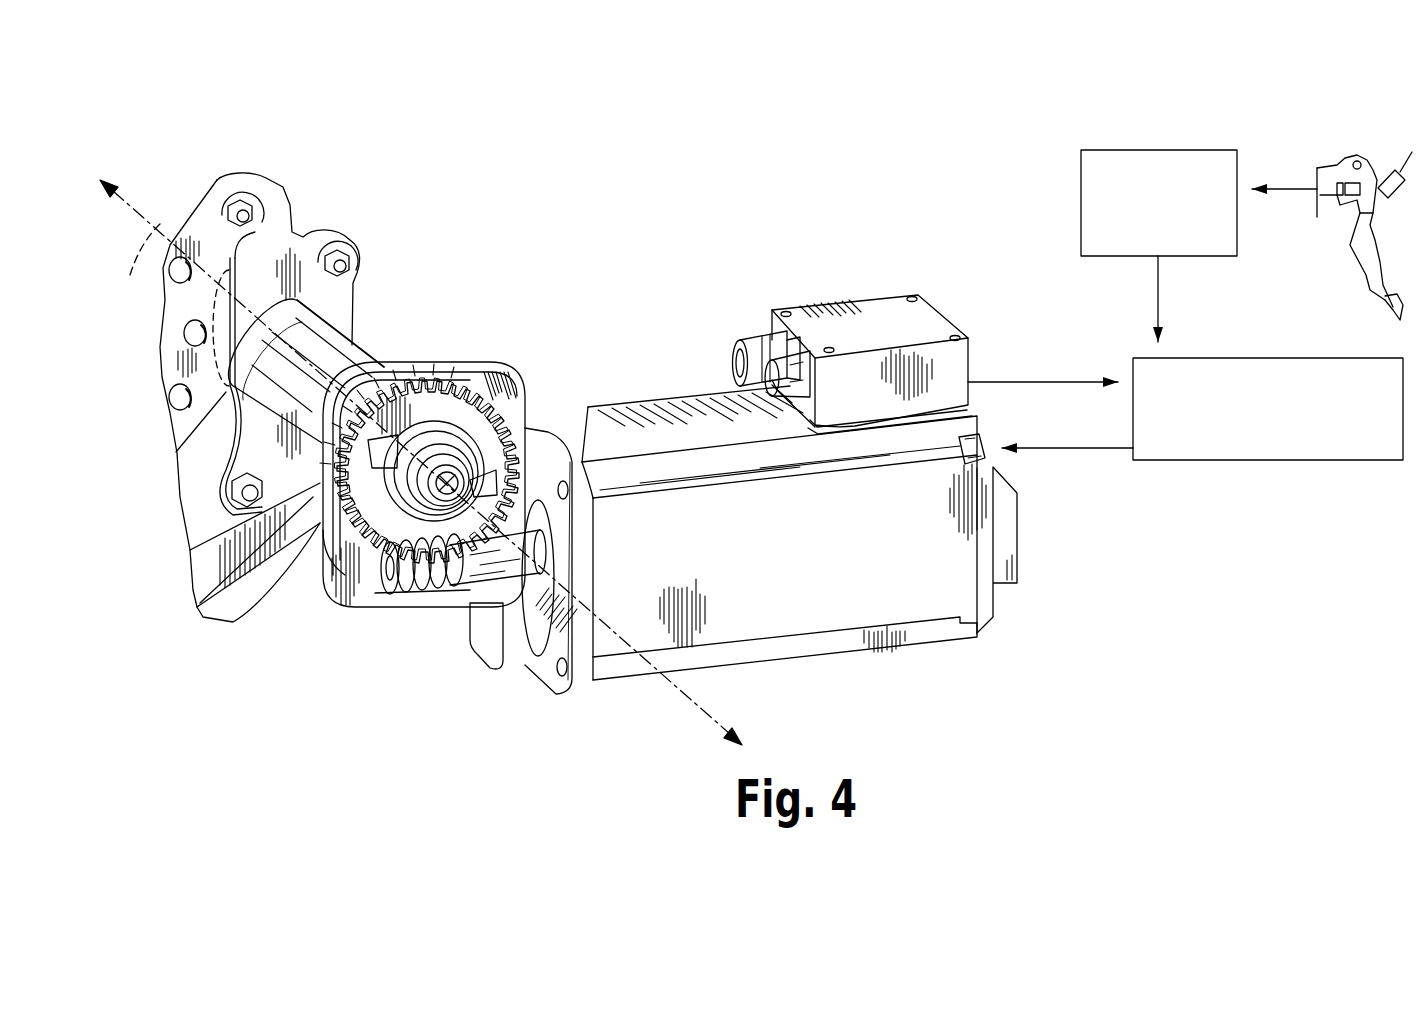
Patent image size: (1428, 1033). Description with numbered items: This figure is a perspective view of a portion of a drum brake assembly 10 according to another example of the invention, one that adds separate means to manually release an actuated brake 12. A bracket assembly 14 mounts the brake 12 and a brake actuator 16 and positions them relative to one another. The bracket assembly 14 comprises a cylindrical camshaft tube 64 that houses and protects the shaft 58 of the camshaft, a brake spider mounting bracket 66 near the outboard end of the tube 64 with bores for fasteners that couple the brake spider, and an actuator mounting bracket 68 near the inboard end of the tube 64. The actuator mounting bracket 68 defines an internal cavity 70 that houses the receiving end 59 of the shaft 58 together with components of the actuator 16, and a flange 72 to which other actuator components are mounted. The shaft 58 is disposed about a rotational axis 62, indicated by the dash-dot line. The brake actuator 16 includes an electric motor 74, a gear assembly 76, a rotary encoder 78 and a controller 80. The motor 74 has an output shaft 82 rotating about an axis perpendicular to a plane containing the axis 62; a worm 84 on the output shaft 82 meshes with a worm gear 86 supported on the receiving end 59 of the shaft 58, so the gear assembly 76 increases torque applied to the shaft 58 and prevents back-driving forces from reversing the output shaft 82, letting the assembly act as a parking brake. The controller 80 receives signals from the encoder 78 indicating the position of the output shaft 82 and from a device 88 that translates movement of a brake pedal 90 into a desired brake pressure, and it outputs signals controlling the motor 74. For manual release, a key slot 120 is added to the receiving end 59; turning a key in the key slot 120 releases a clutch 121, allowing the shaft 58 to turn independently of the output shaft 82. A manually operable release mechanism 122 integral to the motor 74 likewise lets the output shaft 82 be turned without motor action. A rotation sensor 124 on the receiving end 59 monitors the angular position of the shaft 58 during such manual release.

The drum brake assembly 10 is at (536, 328).
The brake 12 is at (206, 516).
The bracket assembly 14 is at (372, 310).
The brake actuator 16 is at (1036, 509).
The shaft 58 is at (400, 492).
The receiving end 59 is at (332, 567).
The rotational axis 62 is at (421, 462).
The camshaft tube 64 is at (360, 353).
The brake spider mounting bracket 66 is at (298, 267).
The actuator mounting bracket 68 is at (513, 362).
The internal cavity 70 is at (393, 548).
The flange 72 is at (490, 643).
The electric motor 74 is at (826, 611).
The gear assembly 76 is at (348, 493).
The rotary encoder 78 is at (847, 325).
The controller 80 is at (1262, 462).
The output shaft 82 is at (473, 567).
The worm 84 is at (410, 600).
The worm gear 86 is at (473, 395).
The device 88 is at (1153, 178).
The brake pedal 90 is at (1358, 224).
The key slot 120 is at (432, 600).
The clutch 121 is at (500, 434).
The manually operable release mechanism 122 is at (1010, 585).
The rotation sensor 124 is at (436, 422).